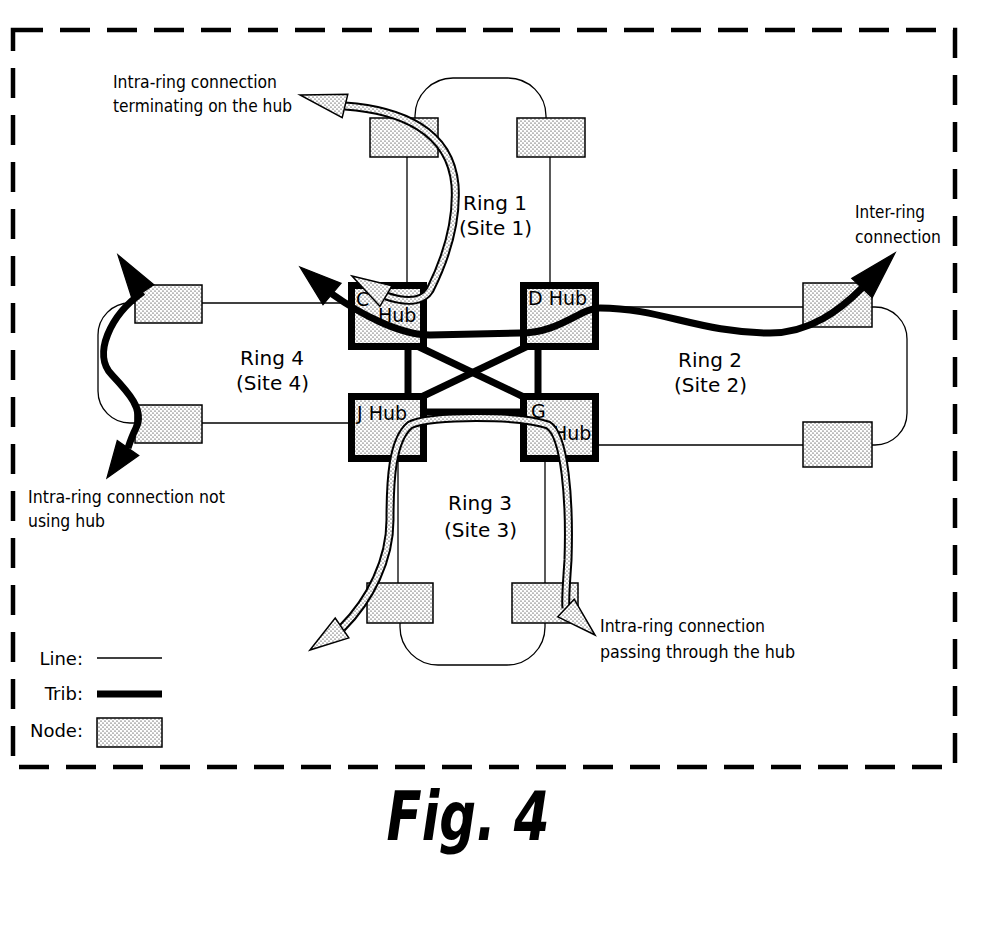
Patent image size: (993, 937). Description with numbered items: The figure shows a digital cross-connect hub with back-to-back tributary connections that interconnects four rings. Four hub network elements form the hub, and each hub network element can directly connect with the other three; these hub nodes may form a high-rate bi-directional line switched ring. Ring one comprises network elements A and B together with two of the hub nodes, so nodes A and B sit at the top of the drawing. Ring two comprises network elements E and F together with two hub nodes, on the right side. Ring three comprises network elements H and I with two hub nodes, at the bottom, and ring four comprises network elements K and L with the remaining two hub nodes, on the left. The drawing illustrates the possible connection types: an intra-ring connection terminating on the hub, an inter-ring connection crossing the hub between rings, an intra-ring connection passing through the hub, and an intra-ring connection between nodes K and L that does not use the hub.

The network element A is at (404, 137).
The network element B is at (551, 137).
The network element E is at (837, 305).
The network element F is at (837, 444).
The network element H is at (545, 603).
The network element I is at (400, 603).
The network element K is at (168, 424).
The network element L is at (168, 304).